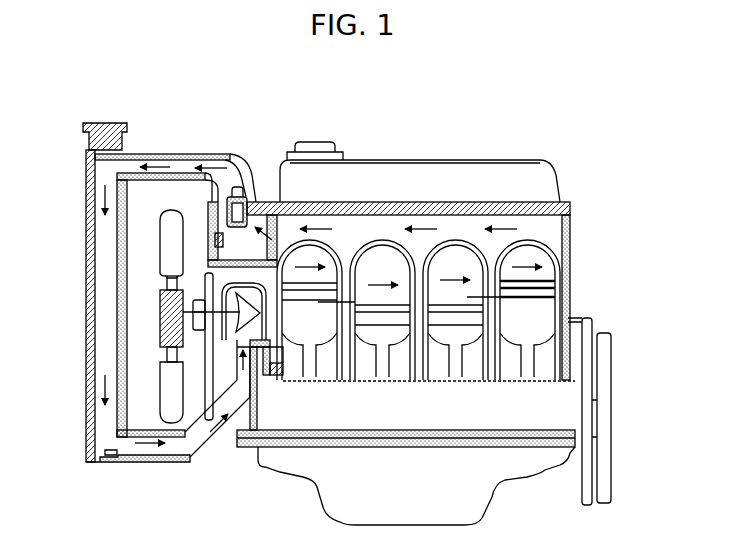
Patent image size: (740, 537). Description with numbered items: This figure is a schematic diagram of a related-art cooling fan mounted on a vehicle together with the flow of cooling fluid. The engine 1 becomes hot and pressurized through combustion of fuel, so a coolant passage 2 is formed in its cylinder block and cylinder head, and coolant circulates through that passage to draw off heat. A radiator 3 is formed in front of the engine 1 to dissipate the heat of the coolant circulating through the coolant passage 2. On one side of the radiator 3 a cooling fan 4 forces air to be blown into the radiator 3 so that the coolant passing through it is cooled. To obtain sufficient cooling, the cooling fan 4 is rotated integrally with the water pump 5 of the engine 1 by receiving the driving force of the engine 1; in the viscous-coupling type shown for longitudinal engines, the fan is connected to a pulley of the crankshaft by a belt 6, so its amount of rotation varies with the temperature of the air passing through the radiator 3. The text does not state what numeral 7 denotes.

The engine 1 is at (552, 174).
The coolant passage 2 is at (552, 229).
The radiator 3 is at (86, 362).
The cooling fan 4 is at (165, 245).
The water pump 5 is at (240, 196).
The belt 6 is at (207, 373).
The coolant pipe 7 is at (218, 418).